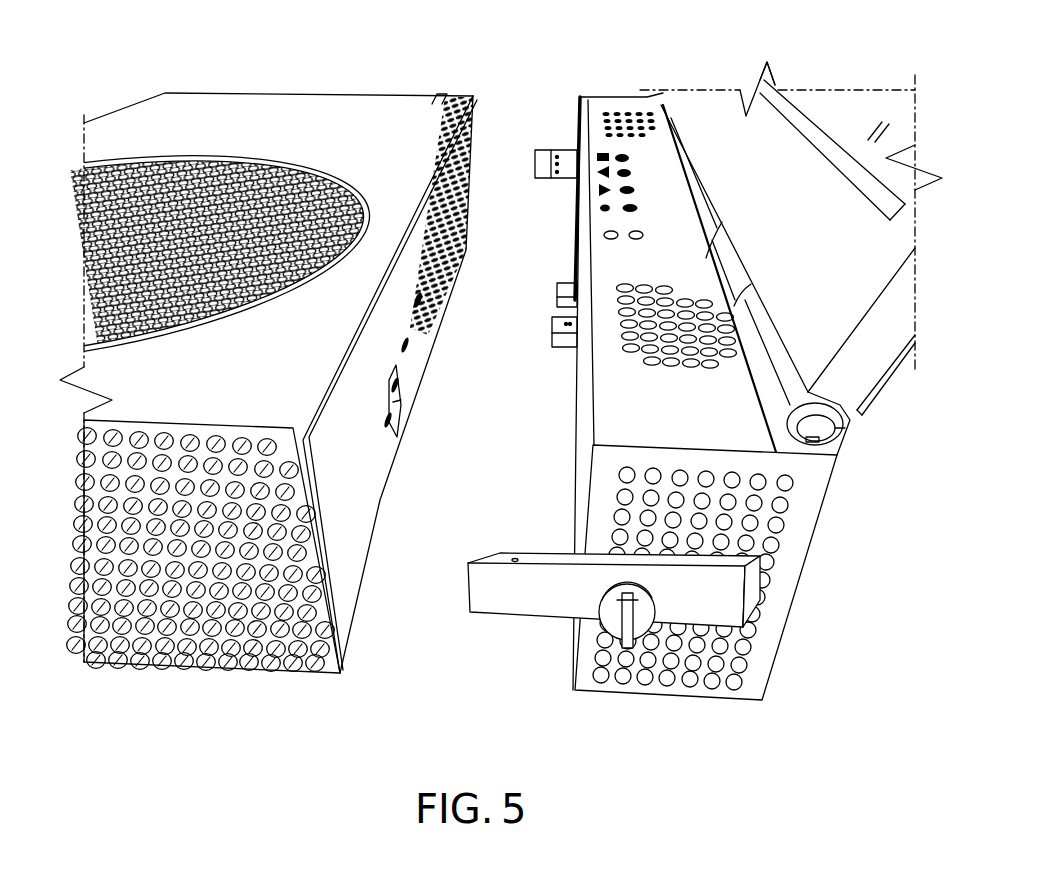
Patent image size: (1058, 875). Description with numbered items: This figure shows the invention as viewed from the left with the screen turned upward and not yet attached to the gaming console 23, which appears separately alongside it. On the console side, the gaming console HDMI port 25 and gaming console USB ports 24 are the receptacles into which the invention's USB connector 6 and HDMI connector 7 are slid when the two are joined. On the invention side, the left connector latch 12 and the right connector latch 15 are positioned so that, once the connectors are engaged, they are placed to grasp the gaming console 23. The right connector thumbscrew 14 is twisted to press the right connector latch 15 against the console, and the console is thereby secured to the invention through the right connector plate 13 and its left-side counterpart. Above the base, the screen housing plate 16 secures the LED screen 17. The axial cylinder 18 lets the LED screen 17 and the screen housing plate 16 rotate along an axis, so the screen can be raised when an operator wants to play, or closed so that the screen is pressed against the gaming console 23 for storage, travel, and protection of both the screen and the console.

The USB Connector 6 is at (705, 361).
The HDMI Connector 7 is at (562, 283).
The Left Connector Latch 12 is at (548, 158).
The Right Connector Plate 13 is at (577, 602).
The Right Connector Thumbscrew 14 is at (636, 613).
The Right Connector Latch 15 is at (508, 595).
The Screen Housing Plate 16 is at (852, 280).
The LED Screen 17 is at (843, 113).
The Axial Cylinder 18 is at (822, 432).
The Gaming Console 23 is at (277, 120).
The Gaming Console USB Ports 24 is at (443, 257).
The Gaming Console HDMI Port 25 is at (423, 313).